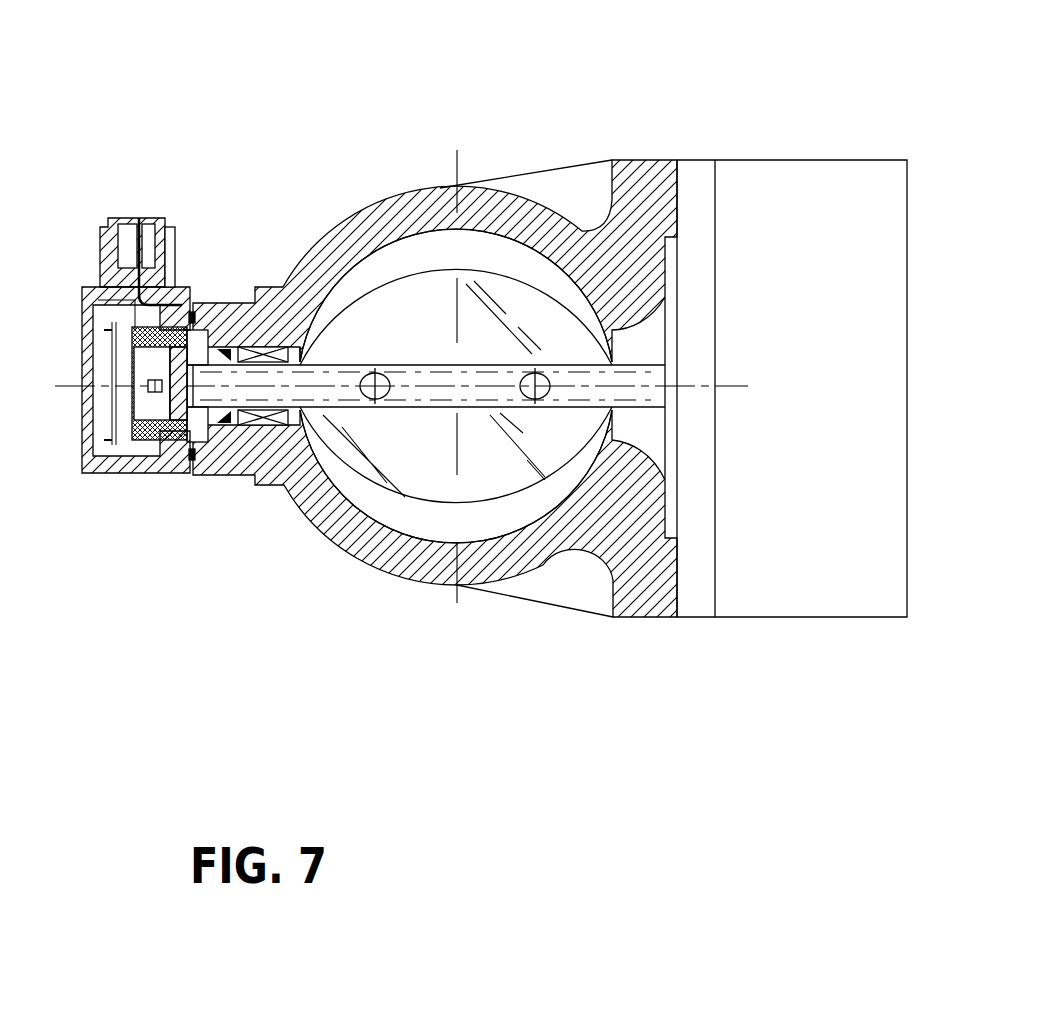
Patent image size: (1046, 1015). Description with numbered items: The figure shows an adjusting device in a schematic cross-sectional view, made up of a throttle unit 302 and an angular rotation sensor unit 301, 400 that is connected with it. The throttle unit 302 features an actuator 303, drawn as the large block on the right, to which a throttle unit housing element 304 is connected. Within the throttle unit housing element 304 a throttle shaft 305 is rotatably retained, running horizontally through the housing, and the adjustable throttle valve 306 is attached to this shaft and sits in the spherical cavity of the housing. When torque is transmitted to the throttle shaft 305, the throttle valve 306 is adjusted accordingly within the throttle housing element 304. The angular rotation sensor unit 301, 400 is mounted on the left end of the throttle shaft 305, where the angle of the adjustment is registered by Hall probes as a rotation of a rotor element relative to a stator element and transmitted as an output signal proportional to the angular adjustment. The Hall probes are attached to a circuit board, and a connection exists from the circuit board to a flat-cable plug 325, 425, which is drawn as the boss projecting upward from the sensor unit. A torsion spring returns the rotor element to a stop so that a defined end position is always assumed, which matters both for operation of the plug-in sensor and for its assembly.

The angular rotation sensor unit 301 is at (115, 468).
The angular rotation sensor unit 400 is at (159, 484).
The throttle unit 302 is at (388, 553).
The actuator 303 is at (788, 578).
The throttle unit housing element 304 is at (633, 596).
The throttle shaft 305 is at (418, 365).
The throttle valve 306 is at (508, 282).
The flat-cable plug 325 is at (127, 245).
The flat-cable plug 425 is at (135, 221).